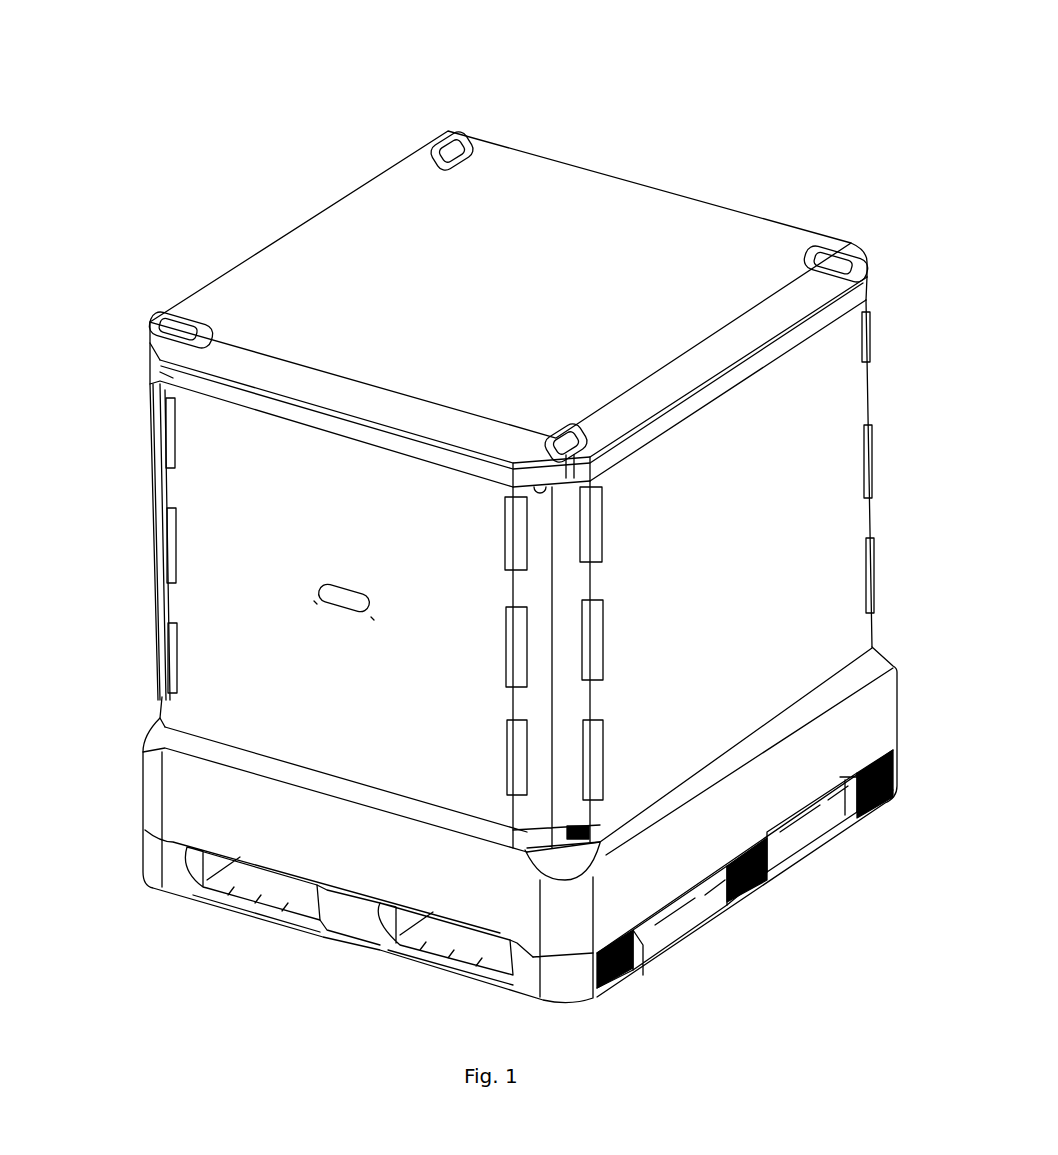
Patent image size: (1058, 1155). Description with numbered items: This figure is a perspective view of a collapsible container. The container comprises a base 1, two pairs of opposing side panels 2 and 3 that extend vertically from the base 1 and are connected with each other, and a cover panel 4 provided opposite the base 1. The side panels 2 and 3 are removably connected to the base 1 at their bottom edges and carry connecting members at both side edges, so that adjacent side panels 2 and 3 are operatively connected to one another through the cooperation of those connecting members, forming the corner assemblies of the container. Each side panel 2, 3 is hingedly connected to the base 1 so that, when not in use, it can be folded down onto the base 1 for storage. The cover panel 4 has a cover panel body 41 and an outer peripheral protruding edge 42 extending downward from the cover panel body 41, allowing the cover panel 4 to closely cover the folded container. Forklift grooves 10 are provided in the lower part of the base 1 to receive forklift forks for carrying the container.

The base 1 is at (177, 797).
The side panel 2 is at (197, 598).
The side panel 3 is at (800, 462).
The cover panel 4 is at (176, 376).
The cover panel body 41 is at (593, 210).
The lid rim 42 is at (870, 302).
The forklift grooves 10 is at (780, 833).